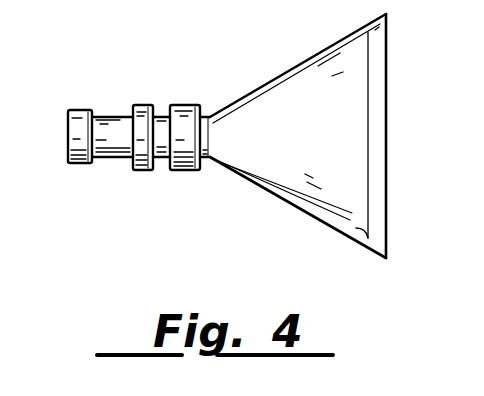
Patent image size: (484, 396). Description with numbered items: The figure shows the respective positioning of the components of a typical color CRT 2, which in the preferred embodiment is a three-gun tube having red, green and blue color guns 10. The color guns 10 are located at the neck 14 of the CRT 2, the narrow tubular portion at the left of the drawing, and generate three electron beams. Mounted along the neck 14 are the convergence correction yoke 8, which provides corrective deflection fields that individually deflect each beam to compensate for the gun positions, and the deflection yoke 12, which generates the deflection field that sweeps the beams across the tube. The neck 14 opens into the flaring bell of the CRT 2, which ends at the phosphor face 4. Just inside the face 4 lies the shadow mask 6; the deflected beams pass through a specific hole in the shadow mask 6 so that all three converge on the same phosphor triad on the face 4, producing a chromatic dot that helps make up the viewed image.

The CRT 2 is at (307, 59).
The phosphor face 4 is at (387, 88).
The shadow mask 6 is at (366, 229).
The convergence correction yoke 8 is at (143, 105).
The color guns 10 is at (80, 112).
The deflection yoke 12 is at (182, 105).
The neck 14 is at (117, 154).